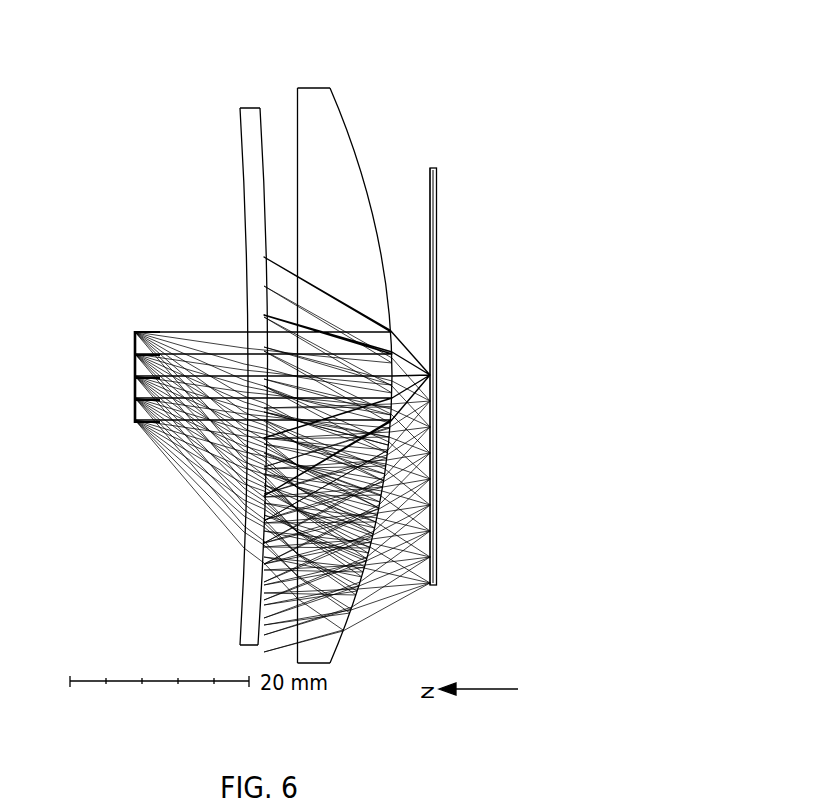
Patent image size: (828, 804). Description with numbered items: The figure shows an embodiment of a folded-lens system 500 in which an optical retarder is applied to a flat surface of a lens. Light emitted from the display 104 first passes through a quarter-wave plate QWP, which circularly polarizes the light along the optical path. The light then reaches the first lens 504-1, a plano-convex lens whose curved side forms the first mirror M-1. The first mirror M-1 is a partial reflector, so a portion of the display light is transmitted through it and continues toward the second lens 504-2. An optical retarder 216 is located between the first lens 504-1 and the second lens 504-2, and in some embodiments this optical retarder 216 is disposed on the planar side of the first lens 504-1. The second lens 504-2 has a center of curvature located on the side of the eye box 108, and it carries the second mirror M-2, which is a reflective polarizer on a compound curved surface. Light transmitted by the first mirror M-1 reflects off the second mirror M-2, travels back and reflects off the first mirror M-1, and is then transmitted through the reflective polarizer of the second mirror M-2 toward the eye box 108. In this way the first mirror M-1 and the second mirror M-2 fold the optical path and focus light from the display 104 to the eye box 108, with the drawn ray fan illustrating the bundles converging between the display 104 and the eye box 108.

The optical system (pancake lens assembly) 500 is at (456, 59).
The second lens 504-2 is at (252, 153).
The second mirror M-2 is at (254, 150).
The first lens 504-1 is at (335, 104).
The optical retarder 216 is at (297, 100).
The first mirror M-1 is at (358, 163).
The quarter-wave plate QWP is at (430, 192).
The display 104 is at (437, 277).
The eye box 108 is at (135, 380).